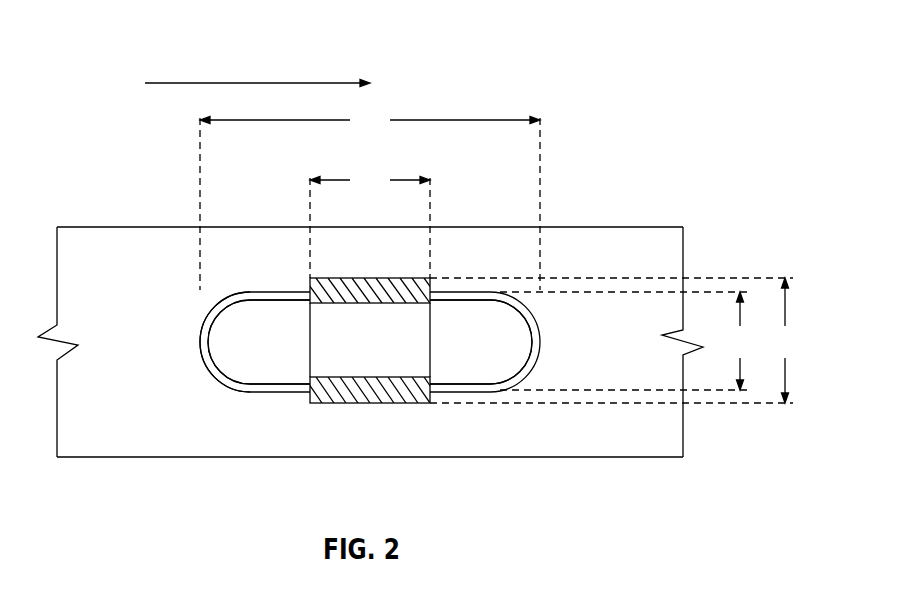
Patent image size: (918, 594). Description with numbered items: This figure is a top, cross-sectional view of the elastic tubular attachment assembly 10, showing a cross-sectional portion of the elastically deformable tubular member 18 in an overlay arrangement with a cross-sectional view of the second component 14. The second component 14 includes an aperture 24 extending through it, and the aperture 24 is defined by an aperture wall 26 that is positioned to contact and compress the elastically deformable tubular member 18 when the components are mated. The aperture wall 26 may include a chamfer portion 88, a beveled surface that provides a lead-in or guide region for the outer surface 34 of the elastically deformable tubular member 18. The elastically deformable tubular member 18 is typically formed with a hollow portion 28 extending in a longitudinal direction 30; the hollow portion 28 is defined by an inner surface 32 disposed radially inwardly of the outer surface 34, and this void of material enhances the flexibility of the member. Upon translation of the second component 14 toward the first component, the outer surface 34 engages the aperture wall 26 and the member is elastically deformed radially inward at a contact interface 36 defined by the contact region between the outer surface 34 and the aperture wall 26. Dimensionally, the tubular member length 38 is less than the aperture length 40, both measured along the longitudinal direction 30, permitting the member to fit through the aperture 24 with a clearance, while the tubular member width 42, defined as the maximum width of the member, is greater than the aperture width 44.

The elastic tubular attachment assembly 10 is at (680, 120).
The second component 14 is at (121, 210).
The elastically deformable tubular member 18 is at (302, 344).
The aperture 24 is at (485, 368).
The aperture wall 26 is at (238, 382).
The hollow portion 28 is at (420, 338).
The longitudinal direction 30 is at (181, 83).
The inner surface 32 is at (393, 377).
The outer surface 34 is at (380, 403).
The contact interface 36 is at (296, 302).
The tubular member length 38 is at (370, 181).
The aperture length 40 is at (370, 121).
The tubular member width 42 is at (785, 340).
The aperture width 44 is at (740, 341).
The chamfer portion 88 is at (220, 376).